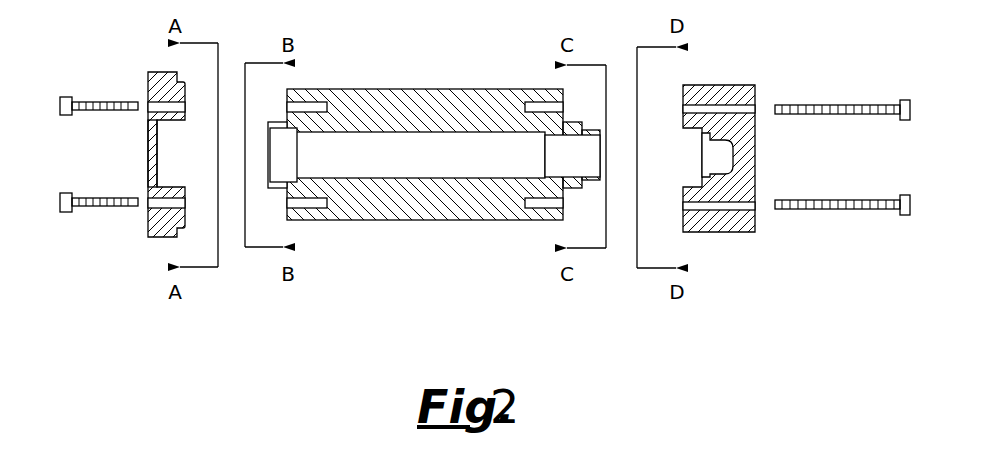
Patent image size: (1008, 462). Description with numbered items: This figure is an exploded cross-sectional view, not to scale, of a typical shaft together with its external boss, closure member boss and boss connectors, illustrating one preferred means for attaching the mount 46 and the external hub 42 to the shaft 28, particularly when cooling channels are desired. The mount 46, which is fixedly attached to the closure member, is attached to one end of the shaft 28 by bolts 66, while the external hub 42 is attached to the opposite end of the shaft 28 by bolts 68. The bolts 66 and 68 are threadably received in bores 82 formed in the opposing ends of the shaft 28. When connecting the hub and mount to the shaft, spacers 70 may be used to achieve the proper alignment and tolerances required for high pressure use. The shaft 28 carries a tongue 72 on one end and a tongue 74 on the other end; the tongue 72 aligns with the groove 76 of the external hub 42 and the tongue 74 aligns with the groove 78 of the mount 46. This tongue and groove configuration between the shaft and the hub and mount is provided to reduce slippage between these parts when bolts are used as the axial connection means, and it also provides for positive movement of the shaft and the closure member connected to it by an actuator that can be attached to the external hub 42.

The shaft 28 is at (402, 92).
The external hub 42 is at (163, 75).
The mount 46 is at (717, 85).
The bolts 66 is at (872, 117).
The bolts 68 is at (98, 113).
The spacers 70 is at (620, 185).
The tongue 72 is at (272, 122).
The tongue 74 is at (580, 122).
The groove 76 is at (160, 186).
The groove 78 is at (695, 182).
The bores 82 is at (312, 208).